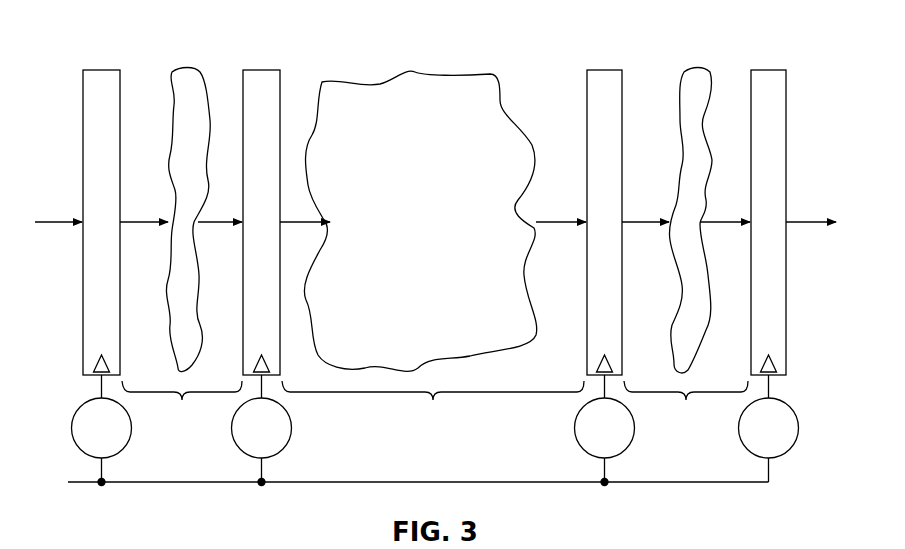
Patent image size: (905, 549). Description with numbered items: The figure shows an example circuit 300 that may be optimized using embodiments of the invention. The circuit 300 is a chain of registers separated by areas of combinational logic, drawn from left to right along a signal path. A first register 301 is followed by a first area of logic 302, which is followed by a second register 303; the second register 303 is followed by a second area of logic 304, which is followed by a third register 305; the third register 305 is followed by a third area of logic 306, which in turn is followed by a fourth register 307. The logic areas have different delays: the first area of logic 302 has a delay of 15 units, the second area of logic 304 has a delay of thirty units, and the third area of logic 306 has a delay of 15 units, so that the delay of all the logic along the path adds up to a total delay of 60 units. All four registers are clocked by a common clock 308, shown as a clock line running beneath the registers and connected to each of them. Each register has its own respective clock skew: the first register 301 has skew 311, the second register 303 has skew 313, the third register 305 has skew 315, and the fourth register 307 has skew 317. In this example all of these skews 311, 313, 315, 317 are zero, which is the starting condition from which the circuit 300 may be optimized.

The circuit 300 is at (98, 42).
The first register 301 is at (100, 70).
The first area of logic 302 is at (184, 70).
The second register 303 is at (259, 70).
The second area of logic 304 is at (410, 70).
The third register 305 is at (604, 70).
The third area of logic 306 is at (696, 70).
The fourth register 307 is at (768, 70).
The clock 308 is at (75, 483).
The skew 311 is at (125, 446).
The skew 313 is at (285, 446).
The skew 315 is at (581, 446).
The skew 317 is at (745, 446).
The delay of logic 15 is at (435, 406).
The total delay 60 is at (433, 406).